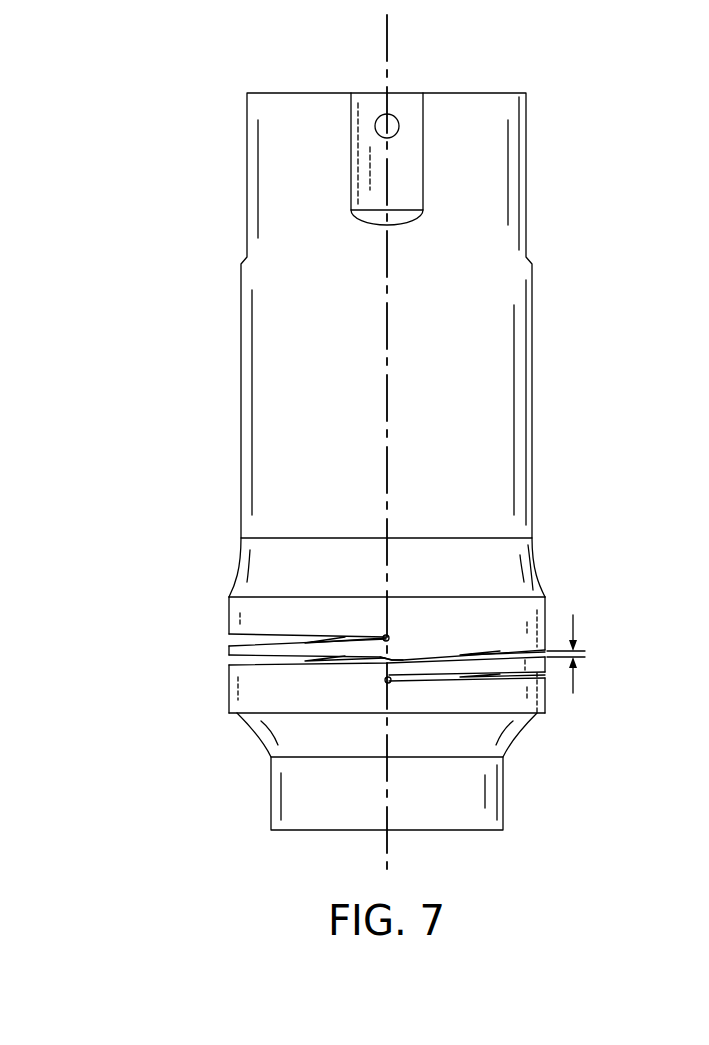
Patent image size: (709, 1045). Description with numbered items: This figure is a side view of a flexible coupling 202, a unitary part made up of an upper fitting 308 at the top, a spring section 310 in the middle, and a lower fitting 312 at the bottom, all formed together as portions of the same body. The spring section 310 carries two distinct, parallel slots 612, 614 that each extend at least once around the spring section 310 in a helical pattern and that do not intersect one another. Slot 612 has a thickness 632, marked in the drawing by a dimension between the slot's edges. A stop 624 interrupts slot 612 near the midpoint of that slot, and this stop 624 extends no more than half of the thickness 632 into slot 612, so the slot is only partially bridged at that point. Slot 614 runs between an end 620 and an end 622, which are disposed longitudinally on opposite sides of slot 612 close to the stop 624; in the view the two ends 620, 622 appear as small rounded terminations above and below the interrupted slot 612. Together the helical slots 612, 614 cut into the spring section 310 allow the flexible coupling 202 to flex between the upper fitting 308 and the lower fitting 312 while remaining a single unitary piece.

The flexible coupling 202 is at (203, 232).
The upper fitting 308 is at (502, 240).
The spring section 310 is at (520, 608).
The lower fitting 312 is at (272, 790).
The slot 612 is at (278, 662).
The slot 614 is at (278, 638).
The end 620 is at (392, 637).
The end 622 is at (388, 684).
The stop 624 is at (378, 666).
The thickness 632 is at (575, 683).